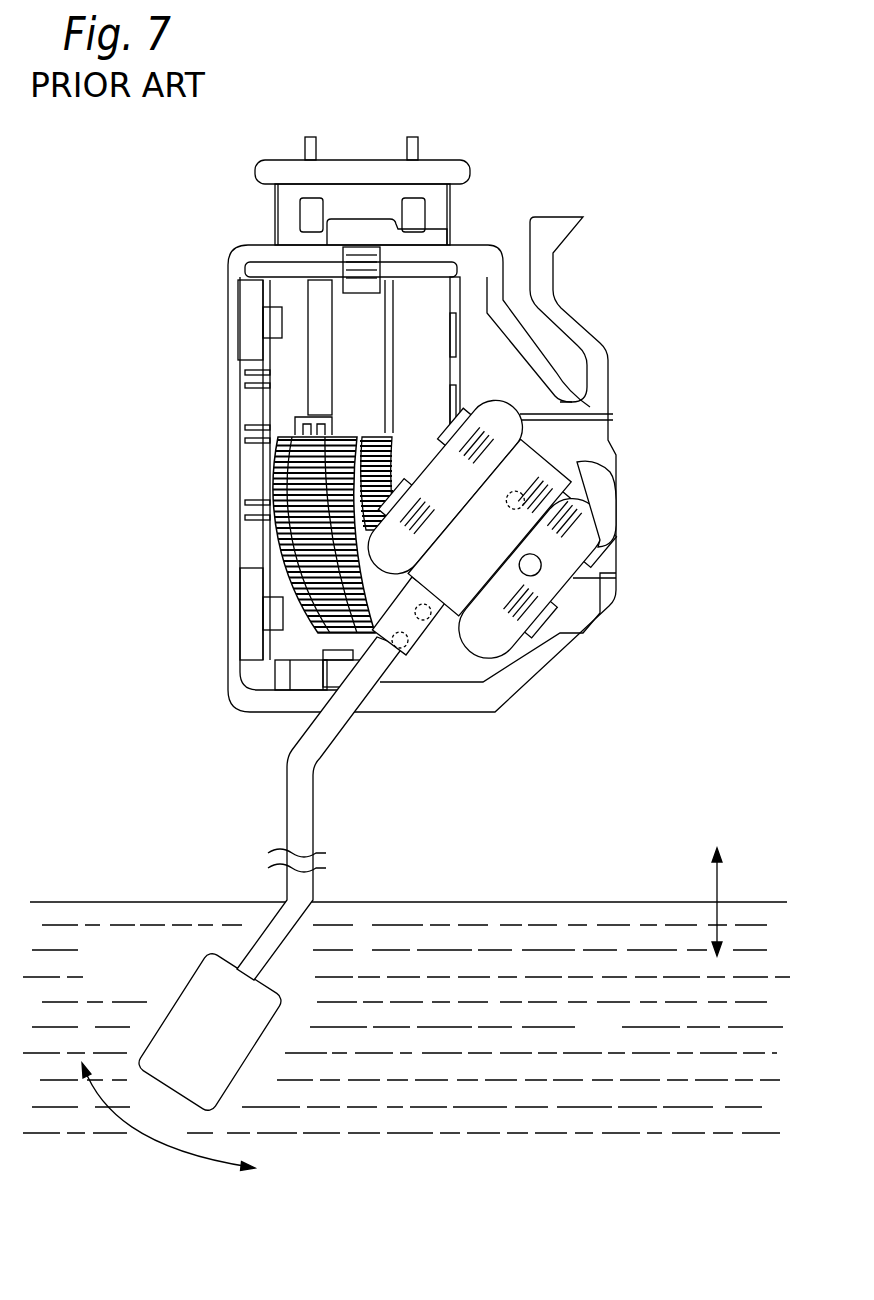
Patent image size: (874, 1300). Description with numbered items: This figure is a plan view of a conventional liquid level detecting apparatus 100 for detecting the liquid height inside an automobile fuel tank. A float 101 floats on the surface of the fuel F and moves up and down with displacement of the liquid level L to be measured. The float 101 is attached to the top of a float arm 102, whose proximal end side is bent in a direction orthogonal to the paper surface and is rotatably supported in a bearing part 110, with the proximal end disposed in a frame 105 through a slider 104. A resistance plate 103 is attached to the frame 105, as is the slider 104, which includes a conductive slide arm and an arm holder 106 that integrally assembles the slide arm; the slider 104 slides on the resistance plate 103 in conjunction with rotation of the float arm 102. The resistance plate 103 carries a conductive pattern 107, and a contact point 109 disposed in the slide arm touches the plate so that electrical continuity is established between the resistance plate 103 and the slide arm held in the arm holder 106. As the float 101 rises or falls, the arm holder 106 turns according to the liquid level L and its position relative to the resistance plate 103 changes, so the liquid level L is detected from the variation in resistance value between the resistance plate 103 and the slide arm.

The liquid level detecting apparatus 100 is at (555, 136).
The float 101 is at (203, 991).
The float arm 102 is at (323, 778).
The resistance plate 103 is at (272, 277).
The slider 104 is at (539, 546).
The frame 105 is at (531, 661).
The arm holder 106 is at (489, 527).
The conductive pattern 107 is at (289, 562).
The contact point 109 is at (425, 622).
The bearing part 110 is at (523, 534).
The liquid level L is at (597, 902).
The fuel F is at (613, 1040).